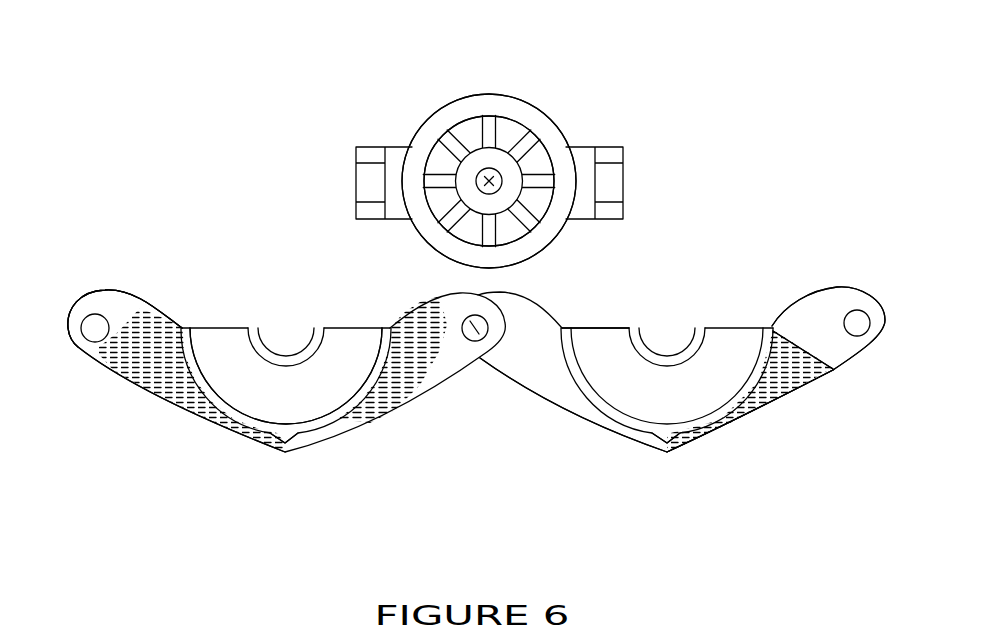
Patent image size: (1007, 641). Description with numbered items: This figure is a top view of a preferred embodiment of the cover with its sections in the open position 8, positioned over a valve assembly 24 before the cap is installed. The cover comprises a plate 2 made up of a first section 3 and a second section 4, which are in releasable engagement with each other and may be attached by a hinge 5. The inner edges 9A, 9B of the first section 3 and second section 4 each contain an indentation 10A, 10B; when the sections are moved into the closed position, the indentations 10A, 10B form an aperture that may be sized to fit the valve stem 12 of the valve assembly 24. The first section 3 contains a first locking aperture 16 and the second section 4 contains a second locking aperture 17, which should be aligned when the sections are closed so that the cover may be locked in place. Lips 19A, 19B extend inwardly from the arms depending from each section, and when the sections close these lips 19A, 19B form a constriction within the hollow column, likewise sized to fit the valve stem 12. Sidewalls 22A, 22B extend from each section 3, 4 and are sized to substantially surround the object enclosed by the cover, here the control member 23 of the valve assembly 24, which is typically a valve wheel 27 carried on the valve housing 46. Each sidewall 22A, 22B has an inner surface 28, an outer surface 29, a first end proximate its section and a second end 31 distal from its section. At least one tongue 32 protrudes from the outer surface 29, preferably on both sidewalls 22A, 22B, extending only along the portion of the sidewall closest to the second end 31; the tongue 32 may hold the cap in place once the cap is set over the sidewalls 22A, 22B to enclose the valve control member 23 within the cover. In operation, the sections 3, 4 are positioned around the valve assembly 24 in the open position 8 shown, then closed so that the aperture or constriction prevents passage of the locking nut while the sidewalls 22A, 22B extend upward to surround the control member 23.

The plate 2 is at (403, 378).
The first section 3 is at (157, 385).
The second section 4 is at (797, 370).
The hinge 5 is at (472, 340).
The open position 8 is at (438, 495).
The inner edge 9A is at (130, 292).
The inner edge 9B is at (807, 291).
The indentation 10A is at (286, 340).
The indentation 10B is at (668, 333).
The valve stem 12 is at (486, 173).
The first locking aperture 16 is at (93, 338).
The second locking aperture 17 is at (858, 322).
The lip 19A is at (265, 326).
The lip 19B is at (643, 345).
The sidewall 22A is at (227, 408).
The sidewall 22B is at (753, 417).
The control member 23 is at (497, 103).
The valve assembly 24 is at (547, 70).
The valve wheel 27 is at (427, 147).
The inner surface 28 is at (573, 348).
The outer surface 29 is at (582, 392).
The second end 31 is at (347, 410).
The tongue 32 is at (285, 443).
The valve housing 46 is at (585, 157).